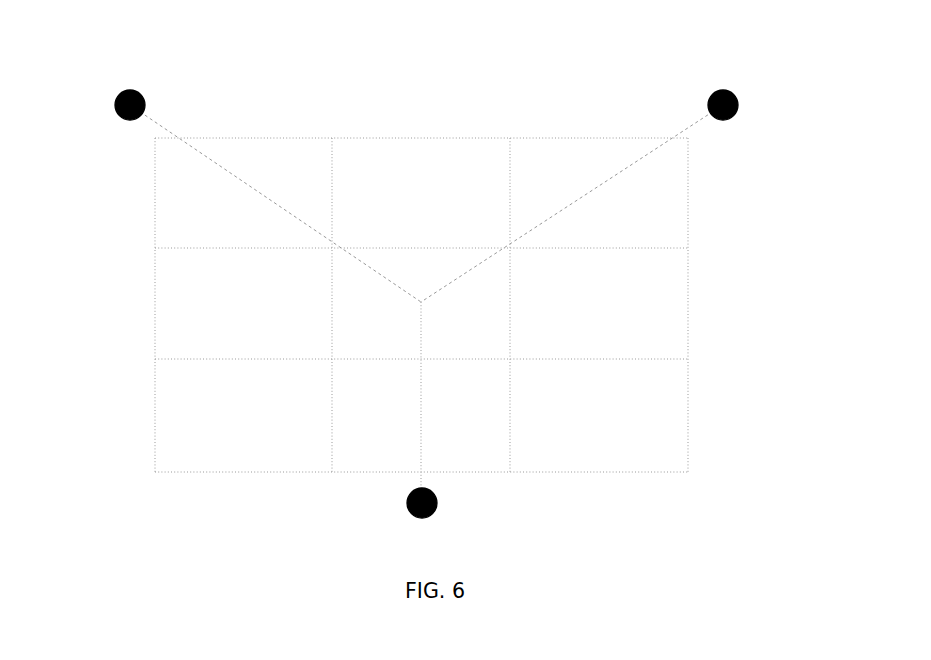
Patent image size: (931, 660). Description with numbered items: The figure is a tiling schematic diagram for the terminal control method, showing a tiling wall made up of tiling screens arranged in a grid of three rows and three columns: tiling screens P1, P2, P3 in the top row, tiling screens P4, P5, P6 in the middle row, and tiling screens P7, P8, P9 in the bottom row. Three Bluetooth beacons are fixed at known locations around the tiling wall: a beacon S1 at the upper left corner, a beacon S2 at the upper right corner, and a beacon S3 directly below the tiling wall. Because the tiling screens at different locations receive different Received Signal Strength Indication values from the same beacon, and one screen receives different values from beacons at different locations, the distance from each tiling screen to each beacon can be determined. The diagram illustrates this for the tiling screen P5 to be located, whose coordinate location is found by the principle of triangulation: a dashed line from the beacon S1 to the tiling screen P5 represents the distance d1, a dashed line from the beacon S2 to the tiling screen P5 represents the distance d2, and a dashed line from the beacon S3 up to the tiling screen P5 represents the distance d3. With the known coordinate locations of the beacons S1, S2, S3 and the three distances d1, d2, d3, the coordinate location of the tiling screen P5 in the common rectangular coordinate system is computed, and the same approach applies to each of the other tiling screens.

The beacon S1 is at (115, 105).
The beacon S2 is at (740, 103).
The beacon S3 is at (410, 523).
The tiling screen P1 is at (243, 193).
The tiling screen P2 is at (421, 193).
The tiling screen P3 is at (599, 193).
The tiling screen P4 is at (243, 303).
The tiling screen P5 is at (421, 303).
The tiling screen P6 is at (599, 303).
The tiling screen P7 is at (243, 415).
The tiling screen P8 is at (421, 415).
The tiling screen P9 is at (599, 415).
The distance d1 is at (275, 203).
The distance d2 is at (572, 203).
The distance d3 is at (436, 402).